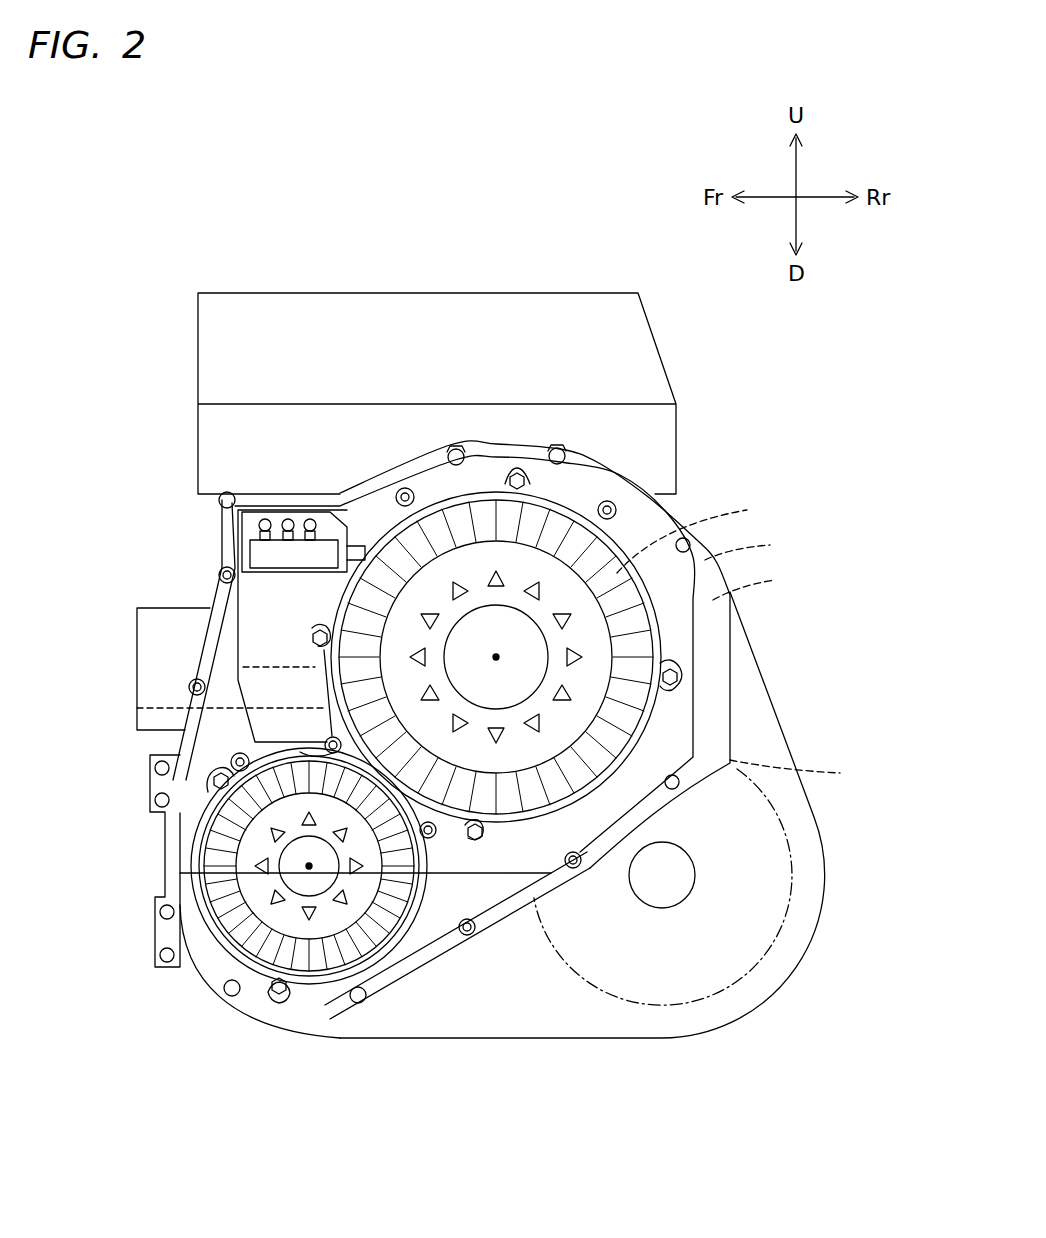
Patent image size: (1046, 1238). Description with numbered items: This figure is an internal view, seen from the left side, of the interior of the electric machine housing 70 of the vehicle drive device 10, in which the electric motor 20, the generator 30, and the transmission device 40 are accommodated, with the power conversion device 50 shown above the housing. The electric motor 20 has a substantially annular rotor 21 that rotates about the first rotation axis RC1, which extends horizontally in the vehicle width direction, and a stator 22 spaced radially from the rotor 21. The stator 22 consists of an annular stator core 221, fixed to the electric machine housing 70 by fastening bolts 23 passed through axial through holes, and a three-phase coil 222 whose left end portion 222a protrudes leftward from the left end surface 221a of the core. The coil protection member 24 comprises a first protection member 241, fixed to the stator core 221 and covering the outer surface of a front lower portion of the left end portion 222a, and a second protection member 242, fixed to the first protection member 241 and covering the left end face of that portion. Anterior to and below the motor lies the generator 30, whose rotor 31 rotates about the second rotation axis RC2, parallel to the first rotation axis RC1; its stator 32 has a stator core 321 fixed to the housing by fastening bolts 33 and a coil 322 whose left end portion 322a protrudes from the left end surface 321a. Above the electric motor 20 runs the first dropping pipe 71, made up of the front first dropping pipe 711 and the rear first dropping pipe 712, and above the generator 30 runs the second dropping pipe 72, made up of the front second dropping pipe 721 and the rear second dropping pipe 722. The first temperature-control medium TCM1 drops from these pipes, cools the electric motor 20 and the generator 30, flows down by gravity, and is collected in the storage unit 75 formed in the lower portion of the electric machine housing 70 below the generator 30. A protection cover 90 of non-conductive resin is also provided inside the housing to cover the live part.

The vehicle drive device 10 is at (190, 240).
The power conversion device 50 is at (480, 330).
The electric machine housing 70 is at (435, 997).
The first dropping pipe 71 is at (491, 511).
The front first dropping pipe 711 is at (405, 488).
The rear first dropping pipe 712 is at (616, 508).
The second dropping pipe 72 is at (199, 751).
The front second dropping pipe 721 is at (213, 781).
The rear second dropping pipe 722 is at (326, 742).
The protection cover 90 is at (275, 600).
The electric motor 20 is at (478, 671).
The rotor 21 is at (600, 605).
The stator 22 is at (660, 723).
The fastening bolts 23 is at (520, 470).
The coil protection member 24 is at (318, 698).
The first protection member 241 is at (380, 683).
The second protection member 242 is at (378, 732).
The first rotation axis RC1 is at (497, 654).
The stator core 221 is at (776, 660).
The left end surface 221a is at (680, 665).
The coil 222 is at (648, 502).
The left end portion 222a is at (648, 560).
The generator 30 is at (274, 950).
The rotor 31 is at (232, 855).
The stator 32 is at (178, 866).
The fastening bolts 33 is at (233, 767).
The stator core 321 is at (390, 1049).
The left end surface 321a is at (350, 945).
The coil 322 is at (156, 1000).
The left end portion 322a is at (220, 957).
The storage unit 75 is at (222, 962).
The first temperature-control medium TCM1 is at (330, 940).
The second rotation axis RC2 is at (309, 880).
The transmission device 40 is at (740, 1008).